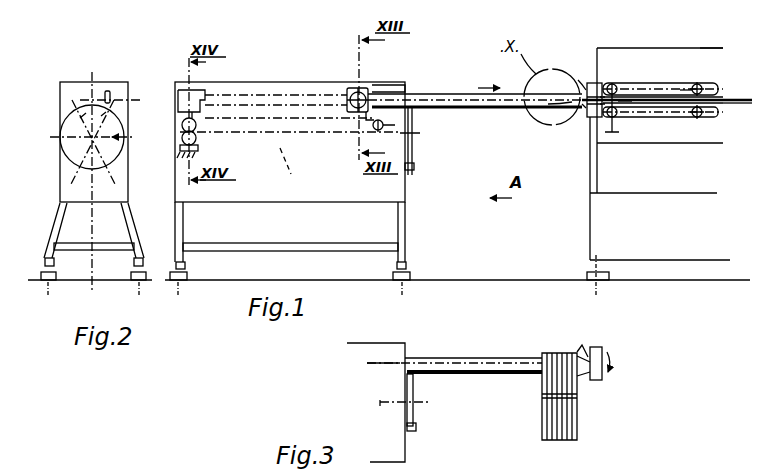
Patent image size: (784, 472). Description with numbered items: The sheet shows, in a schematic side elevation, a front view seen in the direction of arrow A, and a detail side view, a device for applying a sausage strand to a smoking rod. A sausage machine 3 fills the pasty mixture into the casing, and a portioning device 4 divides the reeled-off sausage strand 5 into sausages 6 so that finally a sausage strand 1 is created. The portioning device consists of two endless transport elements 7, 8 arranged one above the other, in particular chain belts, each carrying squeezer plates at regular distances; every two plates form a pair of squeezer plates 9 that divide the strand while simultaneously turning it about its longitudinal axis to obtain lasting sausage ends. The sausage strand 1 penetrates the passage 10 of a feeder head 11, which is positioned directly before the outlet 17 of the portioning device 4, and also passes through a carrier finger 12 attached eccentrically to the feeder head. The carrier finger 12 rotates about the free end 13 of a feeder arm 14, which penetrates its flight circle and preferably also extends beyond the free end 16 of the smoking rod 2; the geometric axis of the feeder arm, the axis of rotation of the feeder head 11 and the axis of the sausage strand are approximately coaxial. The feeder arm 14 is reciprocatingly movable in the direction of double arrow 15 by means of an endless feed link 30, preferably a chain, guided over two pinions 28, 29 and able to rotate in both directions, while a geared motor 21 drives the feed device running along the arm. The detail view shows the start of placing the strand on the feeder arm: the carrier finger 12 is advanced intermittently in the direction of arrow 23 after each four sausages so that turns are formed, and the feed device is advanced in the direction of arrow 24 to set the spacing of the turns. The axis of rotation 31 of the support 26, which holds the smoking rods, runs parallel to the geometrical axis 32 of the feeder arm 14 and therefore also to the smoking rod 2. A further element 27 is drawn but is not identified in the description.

In FIG. 3, the sausage strand 1 is at (574, 420).
In FIG. 1, the smoking rod 2 is at (455, 112).
In FIG. 1, the sausage machine 3 is at (718, 62).
In FIG. 1, the portioning device 4 is at (678, 78).
In FIG. 1, the reeled-off sausage strand 5 is at (735, 120).
In FIG. 1, the sausages 6 is at (628, 103).
In FIG. 1, the endless transport element 7 is at (686, 82).
In FIG. 1, the endless transport element 8 is at (677, 118).
In FIG. 1, the pair of squeezer plates 9 is at (640, 100).
In FIG. 1, the passage 10 is at (584, 110).
In FIG. 1, the feeder head 11 is at (595, 82).
In FIG. 1, the carrier finger 12 is at (580, 82).
In FIG. 3, the free end 13 is at (580, 372).
In FIG. 2, the feeder arm 14 is at (104, 96).
In FIG. 3, the feeder arm 14 is at (447, 362).
In FIG. 3, the double arrow 15 is at (461, 465).
In FIG. 1, the free end 16 is at (572, 103).
In FIG. 1, the outlet 17 is at (605, 78).
In FIG. 1, the geared motor 21 is at (356, 92).
In FIG. 3, the arrow 23 is at (612, 361).
In FIG. 3, the arrow 24 is at (520, 346).
In FIG. 3, the support 26 is at (416, 412).
In FIG. 1, the adjusting knob 27 is at (197, 141).
In FIG. 1, the pinion 28 is at (180, 118).
In FIG. 1, the pinion 29 is at (374, 128).
In FIG. 1, the endless feed link 30 is at (295, 173).
In FIG. 3, the axis of rotation 31 is at (380, 405).
In FIG. 3, the geometrical axis 32 is at (396, 364).